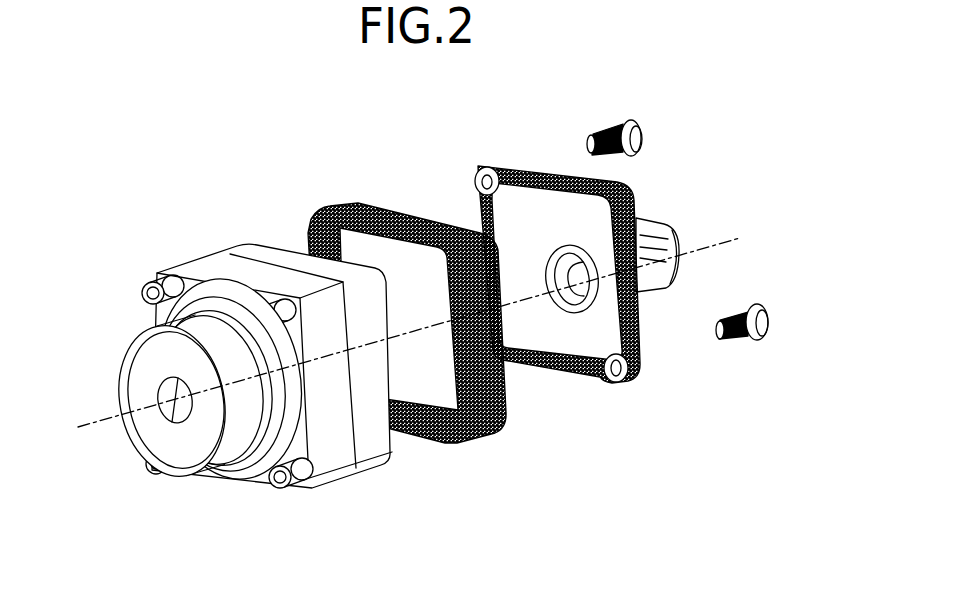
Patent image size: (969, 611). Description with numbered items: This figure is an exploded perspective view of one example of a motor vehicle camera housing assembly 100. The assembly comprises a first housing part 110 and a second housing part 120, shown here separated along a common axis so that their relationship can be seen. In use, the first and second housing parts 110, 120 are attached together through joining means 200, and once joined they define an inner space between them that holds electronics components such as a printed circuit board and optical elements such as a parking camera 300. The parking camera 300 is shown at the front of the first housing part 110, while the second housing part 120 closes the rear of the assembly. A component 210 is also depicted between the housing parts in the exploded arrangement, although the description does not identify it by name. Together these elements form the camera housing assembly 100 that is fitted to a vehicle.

The motor vehicle camera housing assembly 100 is at (358, 170).
The first housing part 110 is at (366, 436).
The second housing part 120 is at (633, 383).
The joining means 200 is at (303, 224).
The sealing member 210 is at (413, 207).
The parking camera 300 is at (192, 453).